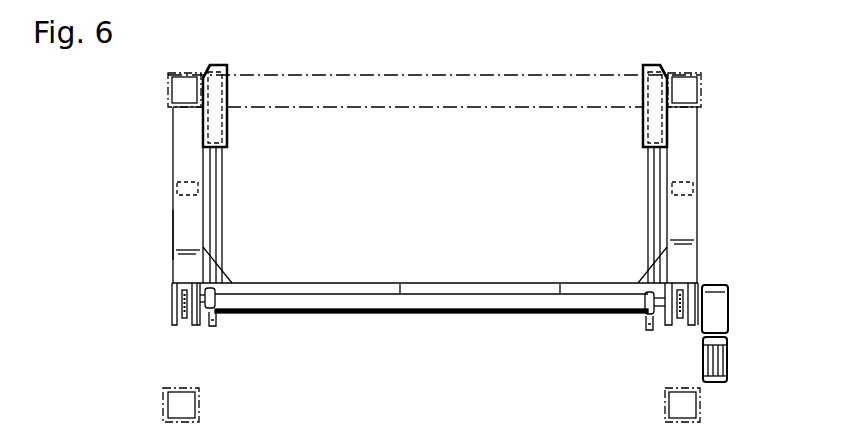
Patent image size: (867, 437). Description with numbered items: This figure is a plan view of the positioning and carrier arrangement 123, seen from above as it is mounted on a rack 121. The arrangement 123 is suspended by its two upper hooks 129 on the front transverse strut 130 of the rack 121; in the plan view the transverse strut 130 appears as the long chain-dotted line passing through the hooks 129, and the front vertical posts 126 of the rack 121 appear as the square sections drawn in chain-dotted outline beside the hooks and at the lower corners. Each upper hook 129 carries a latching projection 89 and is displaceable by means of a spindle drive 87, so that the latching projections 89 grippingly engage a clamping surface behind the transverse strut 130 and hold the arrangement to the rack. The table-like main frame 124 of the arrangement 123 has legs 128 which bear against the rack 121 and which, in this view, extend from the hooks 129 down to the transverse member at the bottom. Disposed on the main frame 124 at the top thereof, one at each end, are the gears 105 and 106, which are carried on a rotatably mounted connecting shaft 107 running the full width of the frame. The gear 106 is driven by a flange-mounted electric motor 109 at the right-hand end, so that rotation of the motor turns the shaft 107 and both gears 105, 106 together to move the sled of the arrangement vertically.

The spindle drive 87 is at (217, 190).
The latching projection 89 is at (205, 68).
The gear 105 is at (186, 322).
The gear 106 is at (680, 322).
The connecting shaft 107 is at (467, 303).
The electric motor 109 is at (730, 358).
The rack 121 is at (327, 78).
The positioning and carrier arrangement 123 is at (160, 202).
The table-like main frame 124 is at (172, 235).
The front vertical post 126 is at (167, 80).
The leg 128 is at (175, 131).
The upper hook 129 is at (212, 62).
The front transverse strut 130 is at (414, 80).